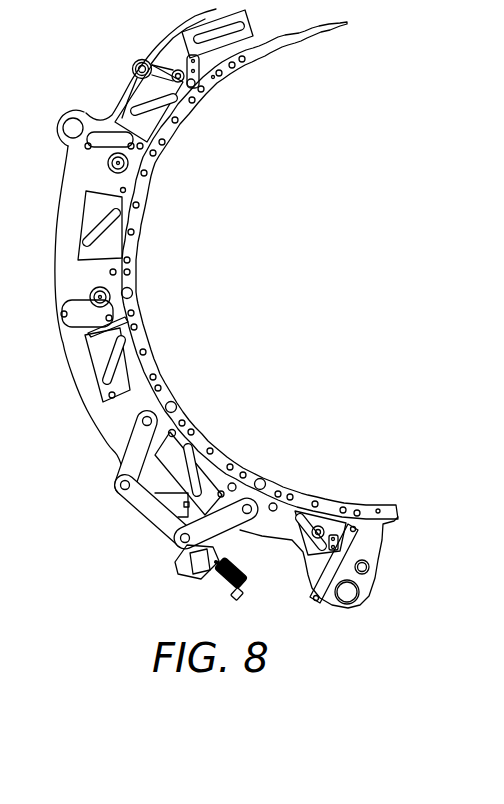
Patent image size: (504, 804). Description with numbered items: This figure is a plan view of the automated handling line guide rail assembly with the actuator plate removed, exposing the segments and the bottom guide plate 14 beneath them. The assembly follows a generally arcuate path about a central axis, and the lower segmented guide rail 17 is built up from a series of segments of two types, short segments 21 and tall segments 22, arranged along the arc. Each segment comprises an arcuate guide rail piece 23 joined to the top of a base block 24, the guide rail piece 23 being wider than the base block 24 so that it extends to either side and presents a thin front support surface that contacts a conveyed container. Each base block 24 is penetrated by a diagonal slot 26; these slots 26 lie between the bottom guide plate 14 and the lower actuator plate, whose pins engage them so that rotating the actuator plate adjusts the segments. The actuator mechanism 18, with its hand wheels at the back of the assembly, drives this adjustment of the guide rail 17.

The bottom guide plate 14 is at (82, 371).
The segmented guide rail 17 is at (293, 84).
The actuator mechanism 18 is at (151, 580).
The short segment 21 is at (220, 434).
The tall segment 22 is at (321, 485).
The guide rail piece 23 is at (172, 132).
The base block 24 is at (147, 358).
The diagonal slot 26 is at (123, 338).